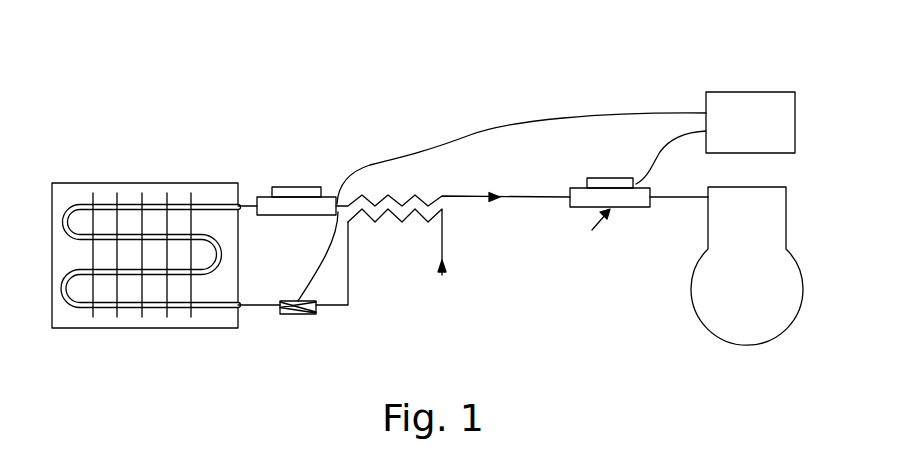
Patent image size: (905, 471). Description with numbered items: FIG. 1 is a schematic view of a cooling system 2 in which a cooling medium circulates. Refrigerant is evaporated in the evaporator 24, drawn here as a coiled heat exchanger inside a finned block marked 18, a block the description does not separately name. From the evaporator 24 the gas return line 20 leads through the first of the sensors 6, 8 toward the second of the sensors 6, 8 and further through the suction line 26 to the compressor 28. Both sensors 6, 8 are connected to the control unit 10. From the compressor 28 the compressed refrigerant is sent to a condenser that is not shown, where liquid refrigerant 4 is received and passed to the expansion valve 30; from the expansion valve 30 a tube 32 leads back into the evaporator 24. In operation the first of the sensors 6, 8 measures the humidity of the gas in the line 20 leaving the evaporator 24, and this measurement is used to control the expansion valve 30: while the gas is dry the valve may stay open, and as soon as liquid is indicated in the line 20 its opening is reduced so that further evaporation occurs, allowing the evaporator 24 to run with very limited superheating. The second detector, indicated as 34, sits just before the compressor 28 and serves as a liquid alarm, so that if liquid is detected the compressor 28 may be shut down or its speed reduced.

The cooling system 2 is at (453, 98).
The liquid refrigerant 4 is at (442, 275).
The sensor 6 is at (263, 194).
The sensor 8 is at (570, 190).
The control unit 10 is at (721, 92).
The heat exchanger 18 is at (111, 351).
The gas return line 20 is at (250, 198).
The evaporator 24 is at (203, 330).
The suction line 26 is at (665, 198).
The compressor 28 is at (700, 248).
The expansion valve 30 is at (318, 311).
The tube 32 is at (258, 302).
The liquid alarm detector 34 is at (569, 205).